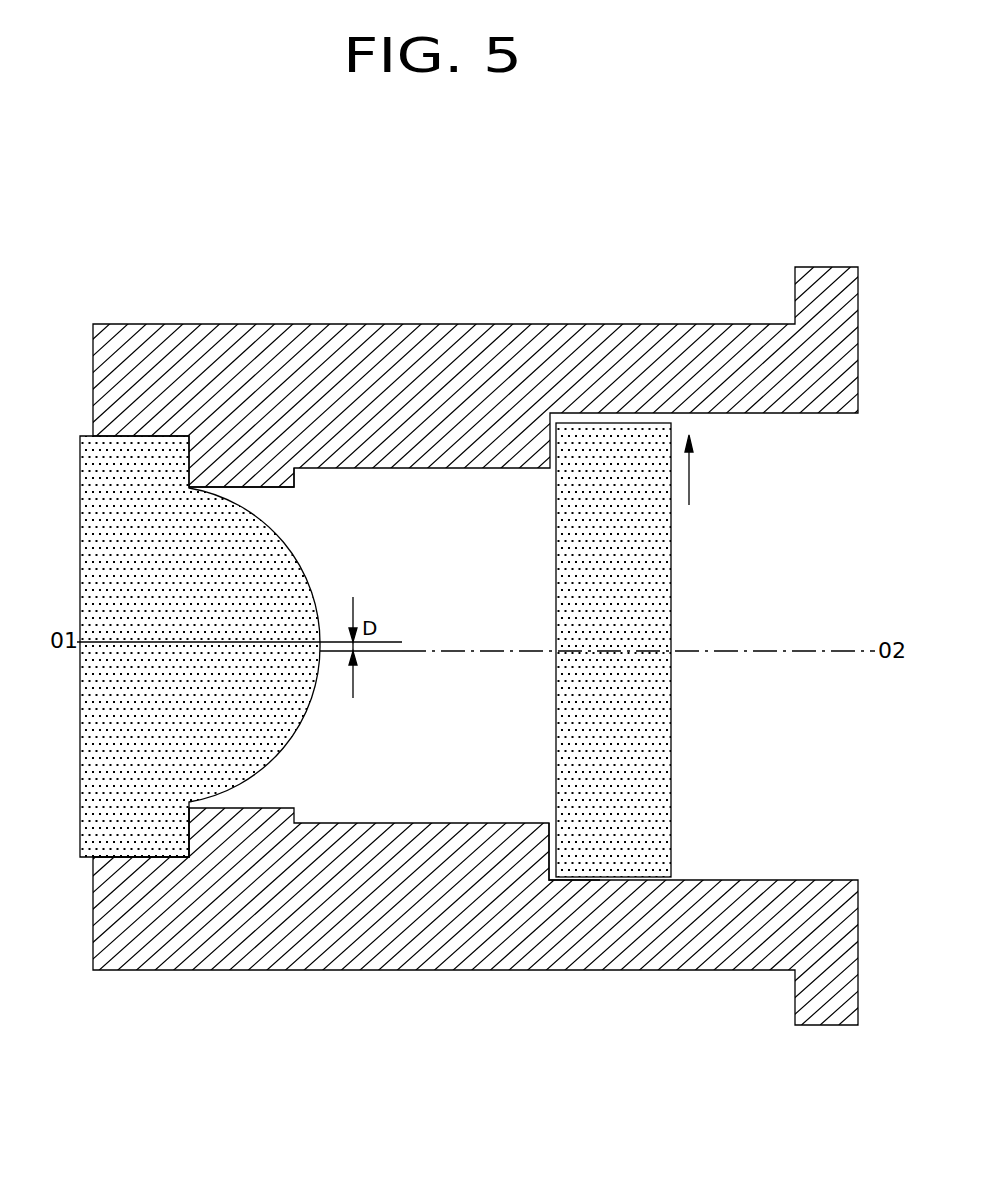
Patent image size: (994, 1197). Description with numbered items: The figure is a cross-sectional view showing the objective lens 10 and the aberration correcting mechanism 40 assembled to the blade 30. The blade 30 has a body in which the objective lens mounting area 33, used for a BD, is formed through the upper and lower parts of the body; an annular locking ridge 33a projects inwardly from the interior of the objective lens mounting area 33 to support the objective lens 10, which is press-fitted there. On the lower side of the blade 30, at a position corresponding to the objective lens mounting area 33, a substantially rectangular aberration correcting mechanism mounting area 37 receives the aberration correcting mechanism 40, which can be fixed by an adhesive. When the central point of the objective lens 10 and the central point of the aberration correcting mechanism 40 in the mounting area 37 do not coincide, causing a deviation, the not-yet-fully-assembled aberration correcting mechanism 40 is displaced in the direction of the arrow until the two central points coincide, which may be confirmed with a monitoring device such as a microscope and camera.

The objective lens 10 is at (143, 458).
The blade 30 is at (361, 314).
The objective lens mounting area 33 is at (155, 845).
The annular locking ridge 33a is at (282, 483).
The aberration correcting mechanism mounting area 37 is at (565, 867).
The aberration correcting mechanism 40 is at (593, 435).